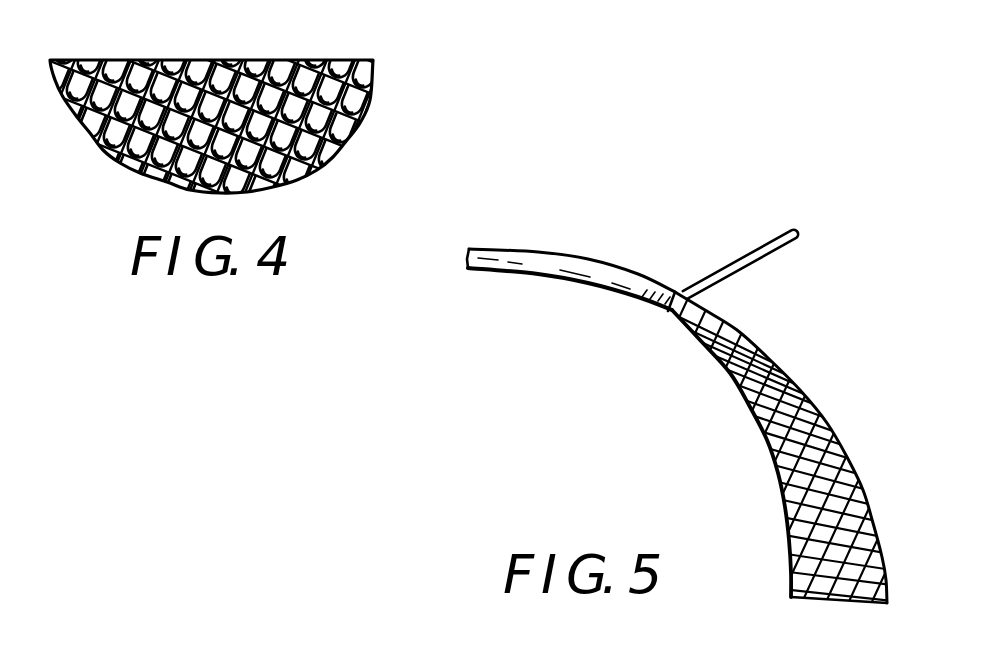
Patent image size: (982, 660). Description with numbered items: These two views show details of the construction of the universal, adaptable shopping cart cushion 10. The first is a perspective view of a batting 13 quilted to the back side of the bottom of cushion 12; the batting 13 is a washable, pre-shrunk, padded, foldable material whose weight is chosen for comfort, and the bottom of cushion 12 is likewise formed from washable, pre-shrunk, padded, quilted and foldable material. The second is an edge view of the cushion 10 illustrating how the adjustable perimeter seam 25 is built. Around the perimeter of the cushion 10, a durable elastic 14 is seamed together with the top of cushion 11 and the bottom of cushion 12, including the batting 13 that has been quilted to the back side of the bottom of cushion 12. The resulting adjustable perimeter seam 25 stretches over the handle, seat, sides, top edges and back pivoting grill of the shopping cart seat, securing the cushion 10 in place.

In FIG. 5, the universal, adaptable shopping cart cushion 10 is at (492, 342).
In FIG. 5, the top of cushion 11 is at (667, 464).
In FIG. 4, the bottom of cushion 12 is at (323, 170).
In FIG. 5, the bottom of cushion 12 is at (793, 402).
In FIG. 4, the batting 13 is at (366, 105).
In FIG. 5, the elastic 14 is at (758, 238).
In FIG. 5, the adjustable perimeter seam 25 is at (593, 258).